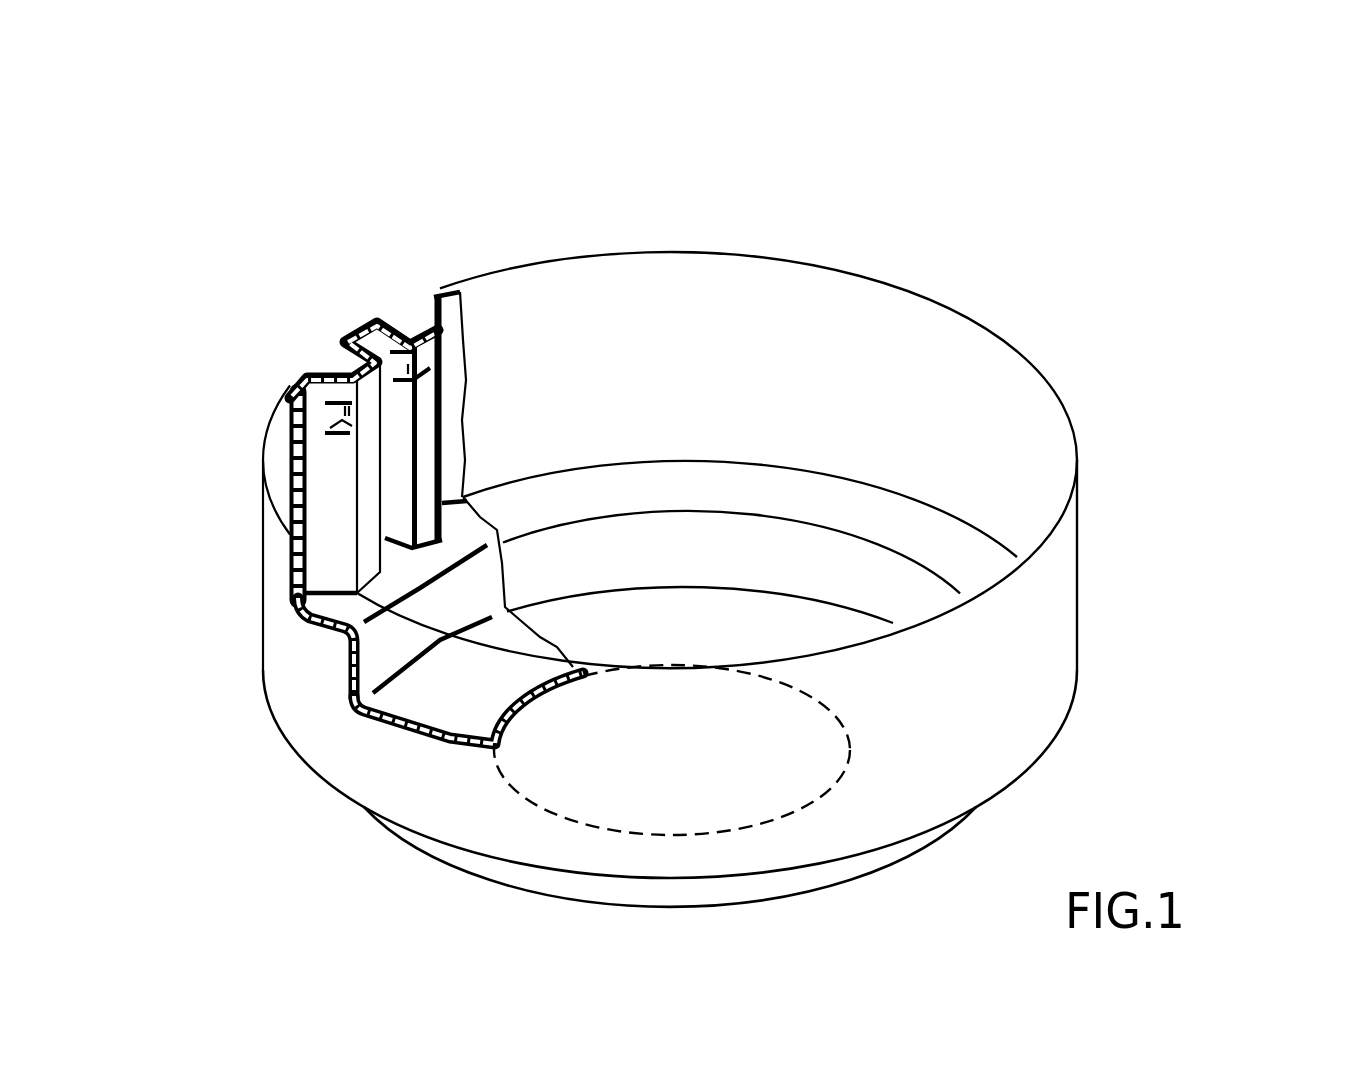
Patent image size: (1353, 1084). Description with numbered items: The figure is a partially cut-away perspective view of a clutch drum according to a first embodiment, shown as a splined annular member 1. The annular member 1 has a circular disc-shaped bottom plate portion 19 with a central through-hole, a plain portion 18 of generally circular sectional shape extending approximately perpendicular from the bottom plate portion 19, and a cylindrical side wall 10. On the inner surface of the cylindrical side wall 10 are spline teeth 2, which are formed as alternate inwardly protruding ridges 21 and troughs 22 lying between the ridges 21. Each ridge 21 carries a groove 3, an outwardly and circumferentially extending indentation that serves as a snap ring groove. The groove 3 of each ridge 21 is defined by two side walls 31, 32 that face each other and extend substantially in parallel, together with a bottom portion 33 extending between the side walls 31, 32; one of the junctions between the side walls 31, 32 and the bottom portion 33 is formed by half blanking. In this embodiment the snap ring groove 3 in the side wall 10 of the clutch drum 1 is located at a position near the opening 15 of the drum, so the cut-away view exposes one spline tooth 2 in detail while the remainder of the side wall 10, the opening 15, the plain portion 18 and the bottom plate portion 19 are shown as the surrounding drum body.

The annular member 1 is at (687, 476).
The spline teeth 2 is at (482, 479).
The groove 3 is at (459, 356).
The cylindrical side wall 10 is at (1087, 578).
The opening 15 is at (897, 278).
The plain portion 18 is at (382, 640).
The bottom plate portion 19 is at (475, 706).
The ridge 21 is at (363, 508).
The trough 22 is at (292, 197).
The side wall 31 is at (462, 340).
The side wall 32 is at (350, 403).
The bottom portion 33 is at (400, 325).